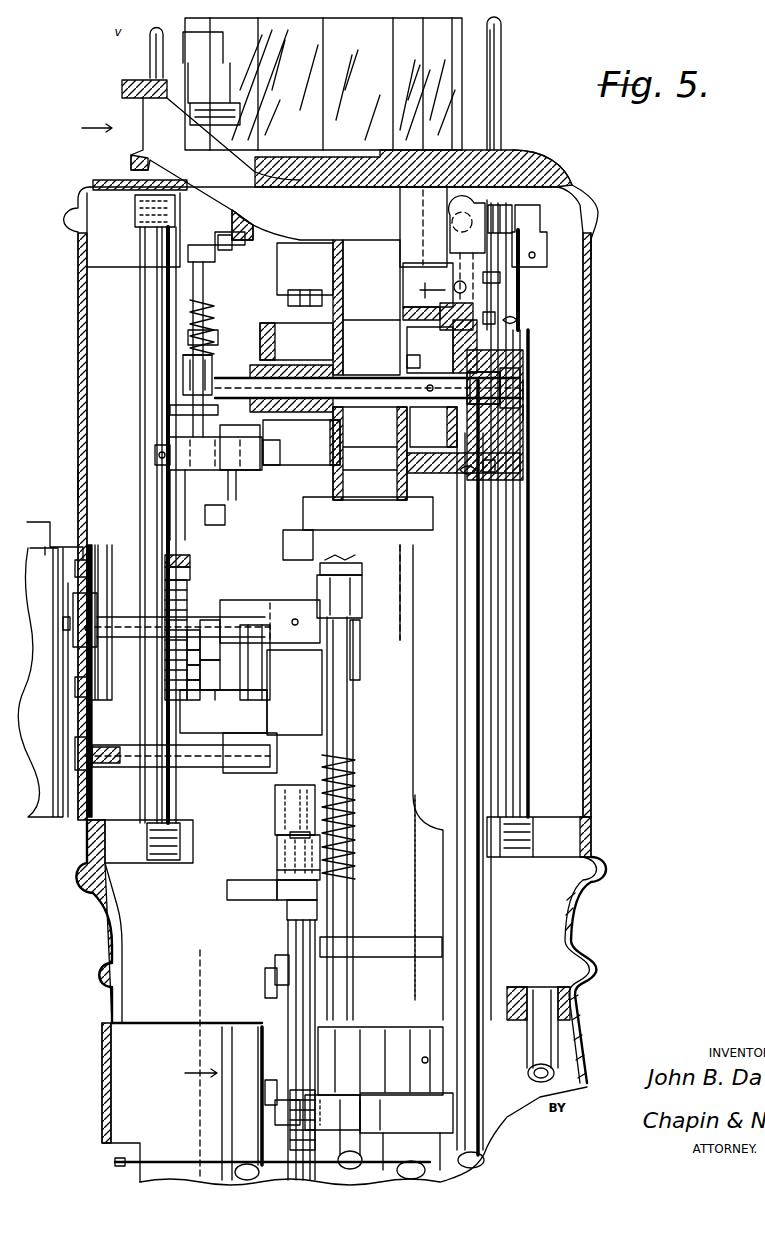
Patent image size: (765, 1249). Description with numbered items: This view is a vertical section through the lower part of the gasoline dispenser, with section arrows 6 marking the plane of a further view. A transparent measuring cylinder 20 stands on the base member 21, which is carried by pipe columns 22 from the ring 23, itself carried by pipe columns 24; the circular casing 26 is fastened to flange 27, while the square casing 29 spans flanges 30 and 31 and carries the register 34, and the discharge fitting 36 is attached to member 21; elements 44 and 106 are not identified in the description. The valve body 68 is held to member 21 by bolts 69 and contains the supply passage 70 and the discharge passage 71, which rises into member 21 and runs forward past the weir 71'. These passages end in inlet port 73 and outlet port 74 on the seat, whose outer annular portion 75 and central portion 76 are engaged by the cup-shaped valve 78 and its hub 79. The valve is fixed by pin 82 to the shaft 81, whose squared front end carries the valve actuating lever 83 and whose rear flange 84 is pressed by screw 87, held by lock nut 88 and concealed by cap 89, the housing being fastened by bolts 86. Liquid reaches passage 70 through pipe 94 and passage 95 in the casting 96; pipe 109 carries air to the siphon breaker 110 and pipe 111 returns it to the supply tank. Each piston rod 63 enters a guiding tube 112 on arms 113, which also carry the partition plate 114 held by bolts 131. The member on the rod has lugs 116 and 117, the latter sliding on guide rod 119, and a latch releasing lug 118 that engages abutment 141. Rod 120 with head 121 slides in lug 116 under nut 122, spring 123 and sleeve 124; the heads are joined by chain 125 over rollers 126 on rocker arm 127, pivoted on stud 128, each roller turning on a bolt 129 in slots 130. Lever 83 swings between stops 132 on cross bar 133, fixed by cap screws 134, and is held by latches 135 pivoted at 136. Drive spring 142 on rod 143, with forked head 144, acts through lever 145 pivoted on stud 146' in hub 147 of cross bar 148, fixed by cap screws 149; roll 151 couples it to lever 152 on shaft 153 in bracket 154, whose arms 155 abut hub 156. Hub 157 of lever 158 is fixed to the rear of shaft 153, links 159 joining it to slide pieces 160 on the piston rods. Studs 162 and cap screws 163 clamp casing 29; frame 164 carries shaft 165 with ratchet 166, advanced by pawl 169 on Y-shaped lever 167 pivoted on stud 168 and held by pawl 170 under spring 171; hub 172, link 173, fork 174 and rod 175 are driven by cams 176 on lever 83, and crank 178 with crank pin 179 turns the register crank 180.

The section line 6 is at (149, 638).
The measuring cylinder 20 is at (323, 84).
The base member 21 is at (560, 182).
The pipe columns 22 is at (150, 247).
The ring 23 is at (600, 898).
The pipe columns 24 is at (545, 1062).
The casing 26 is at (102, 1097).
The circular flange 27 is at (102, 1014).
The casing 29 is at (88, 482).
The flange 30 is at (600, 251).
The flange 31 is at (597, 834).
The register 34 is at (35, 552).
The fitting 36 is at (132, 85).
The rod 44 is at (147, 43).
The piston rod 63 is at (345, 1013).
The valve body 68 is at (335, 292).
The bolts 69 is at (455, 290).
The supply passage 70 is at (370, 479).
The discharge passage 71 is at (379, 281).
The weir 71' is at (100, 154).
The inlet port 73 is at (370, 453).
The outlet port 74 is at (371, 326).
The outer annular portion 75 is at (440, 338).
The central inner portion 76 is at (412, 362).
The valve 78 is at (517, 330).
The central hub 79 is at (433, 429).
The shaft 81 is at (367, 388).
The pin 82 is at (435, 388).
The valve actuating lever 83 is at (305, 269).
The flange 84 is at (522, 442).
The bolts 86 is at (480, 316).
The screw 87 is at (540, 377).
The lock nut 88 is at (530, 400).
The removable cap 89 is at (530, 415).
The pipe 94 is at (425, 1150).
The passage 95 is at (400, 640).
The casting 96 is at (401, 900).
The head 106 is at (192, 312).
The pipe 109 is at (483, 290).
The siphon breaker 110 is at (545, 240).
The pipe 111 is at (472, 272).
The guiding tubes 112 is at (345, 1130).
The arms 113 is at (385, 1082).
The partition plate 114 is at (115, 1163).
The lug 116 is at (252, 915).
The lug 117 is at (400, 955).
The latch releasing lug 118 is at (231, 897).
The guide rod 119 is at (262, 513).
The rod 120 is at (280, 870).
The head 121 is at (285, 930).
The nut 122 is at (284, 809).
The spring 123 is at (290, 832).
The sleeve 124 is at (257, 855).
The sprocket chain 125 is at (298, 967).
The grooved rollers 126 is at (290, 1137).
The rocker arm 127 is at (280, 1052).
The stud 128 is at (265, 1045).
The bolt 129 is at (300, 984).
The slots 130 is at (275, 1107).
The bolts 131 is at (347, 1143).
The stops 132 is at (200, 355).
The cross bar 133 is at (296, 341).
The cap screws 134 is at (205, 343).
The latches 135 is at (232, 240).
The pivot 136 is at (222, 235).
The adjustable abutment 141 is at (203, 471).
The spring 142 is at (210, 330).
The rod 143 is at (232, 238).
The forked head 144 is at (190, 365).
The lever 145 is at (205, 440).
The stud 146' is at (95, 458).
The hub 147 is at (178, 480).
The cross bar 148 is at (280, 441).
The cap screws 149 is at (282, 449).
The roll 151 is at (170, 562).
The lever 152 is at (172, 578).
The shaft 153 is at (255, 668).
The bracket 154 is at (322, 695).
The diverging arms 155 is at (294, 692).
The hub 156 is at (223, 715).
The hub 157 is at (325, 620).
The lever 158 is at (356, 683).
The link 159 is at (356, 654).
The slide piece 160 is at (370, 617).
The studs 162 is at (137, 762).
The cap screws 163 is at (82, 760).
The frame 164 is at (97, 703).
The register operating shaft 165 is at (95, 648).
The ratchet 166 is at (175, 655).
The Y-shaped lever 167 is at (175, 642).
The stud 168 is at (175, 692).
The pawl 169 is at (172, 607).
The holding pawl 170 is at (223, 705).
The coil spring 171 is at (172, 667).
The hub 172 is at (215, 648).
The link 173 is at (225, 628).
The fork 174 is at (218, 516).
The rod 175 is at (228, 492).
The cams 176 is at (195, 412).
The crank 178 is at (88, 640).
The crank pin 179 is at (78, 600).
The operating crank 180 is at (65, 640).